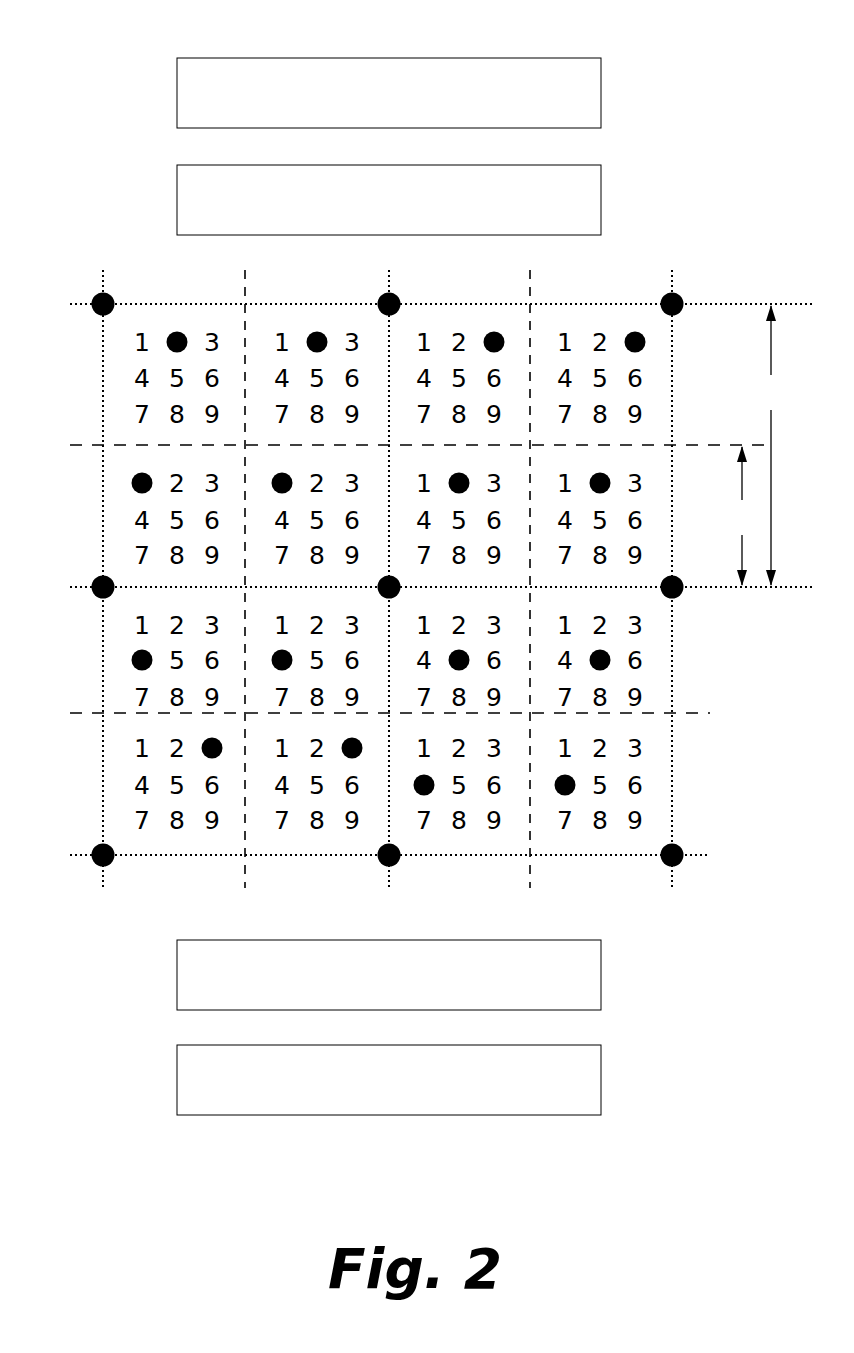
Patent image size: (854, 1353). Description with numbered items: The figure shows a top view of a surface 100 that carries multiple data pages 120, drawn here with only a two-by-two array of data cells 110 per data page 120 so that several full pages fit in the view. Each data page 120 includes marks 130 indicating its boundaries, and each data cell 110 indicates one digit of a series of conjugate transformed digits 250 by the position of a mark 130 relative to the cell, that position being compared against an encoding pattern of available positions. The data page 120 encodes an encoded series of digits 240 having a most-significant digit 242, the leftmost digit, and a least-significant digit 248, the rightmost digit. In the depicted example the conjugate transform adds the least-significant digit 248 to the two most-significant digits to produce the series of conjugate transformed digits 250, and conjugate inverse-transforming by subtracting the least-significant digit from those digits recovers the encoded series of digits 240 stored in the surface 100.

The surface 100 is at (150, 270).
The data cell 110 is at (742, 516).
The data page 120 is at (778, 445).
The mark 130 is at (612, 658).
The encoded series of digits 240 is at (548, 94).
The most-significant digit 242 is at (265, 80).
The least-significant digit 248 is at (517, 80).
The series of conjugate transformed digits 250 is at (545, 199).